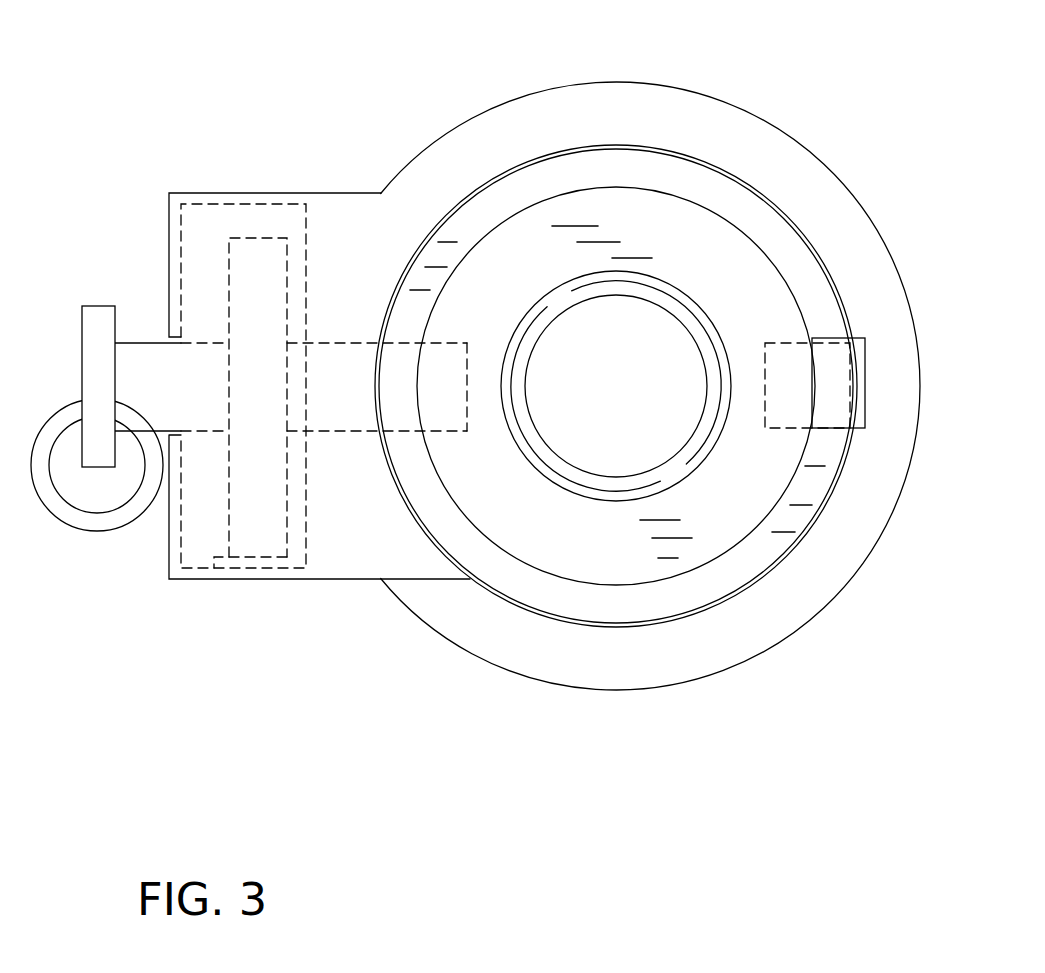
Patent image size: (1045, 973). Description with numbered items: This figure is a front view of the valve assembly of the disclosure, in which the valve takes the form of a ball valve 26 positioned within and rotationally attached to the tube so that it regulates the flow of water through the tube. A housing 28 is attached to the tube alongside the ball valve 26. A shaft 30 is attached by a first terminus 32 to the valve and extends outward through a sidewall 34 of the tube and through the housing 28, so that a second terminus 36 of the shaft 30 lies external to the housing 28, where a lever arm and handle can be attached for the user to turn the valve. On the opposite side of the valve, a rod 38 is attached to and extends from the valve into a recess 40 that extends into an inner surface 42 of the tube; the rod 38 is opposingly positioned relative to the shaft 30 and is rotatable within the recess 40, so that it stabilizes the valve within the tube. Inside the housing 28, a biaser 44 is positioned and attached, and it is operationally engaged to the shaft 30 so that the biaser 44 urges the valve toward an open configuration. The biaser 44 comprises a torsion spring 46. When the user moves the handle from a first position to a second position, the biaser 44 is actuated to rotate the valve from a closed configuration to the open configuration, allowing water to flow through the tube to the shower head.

The ball valve 26 is at (669, 232).
The housing 28 is at (210, 190).
The shaft 30 is at (357, 366).
The first terminus 32 is at (468, 358).
The sidewall 34 is at (800, 586).
The second terminus 36 is at (117, 376).
The rod 38 is at (790, 380).
The recess 40 is at (862, 360).
The inner surface 42 is at (828, 516).
The biaser 44 is at (257, 260).
The torsion spring 46 is at (263, 527).